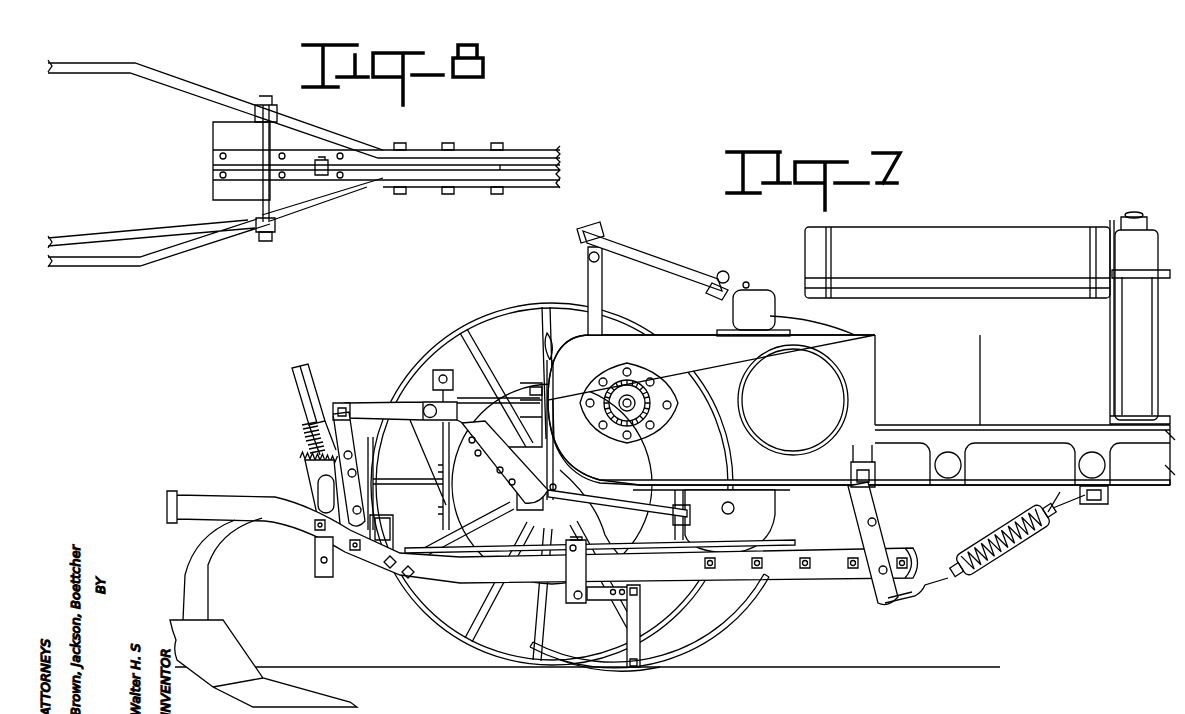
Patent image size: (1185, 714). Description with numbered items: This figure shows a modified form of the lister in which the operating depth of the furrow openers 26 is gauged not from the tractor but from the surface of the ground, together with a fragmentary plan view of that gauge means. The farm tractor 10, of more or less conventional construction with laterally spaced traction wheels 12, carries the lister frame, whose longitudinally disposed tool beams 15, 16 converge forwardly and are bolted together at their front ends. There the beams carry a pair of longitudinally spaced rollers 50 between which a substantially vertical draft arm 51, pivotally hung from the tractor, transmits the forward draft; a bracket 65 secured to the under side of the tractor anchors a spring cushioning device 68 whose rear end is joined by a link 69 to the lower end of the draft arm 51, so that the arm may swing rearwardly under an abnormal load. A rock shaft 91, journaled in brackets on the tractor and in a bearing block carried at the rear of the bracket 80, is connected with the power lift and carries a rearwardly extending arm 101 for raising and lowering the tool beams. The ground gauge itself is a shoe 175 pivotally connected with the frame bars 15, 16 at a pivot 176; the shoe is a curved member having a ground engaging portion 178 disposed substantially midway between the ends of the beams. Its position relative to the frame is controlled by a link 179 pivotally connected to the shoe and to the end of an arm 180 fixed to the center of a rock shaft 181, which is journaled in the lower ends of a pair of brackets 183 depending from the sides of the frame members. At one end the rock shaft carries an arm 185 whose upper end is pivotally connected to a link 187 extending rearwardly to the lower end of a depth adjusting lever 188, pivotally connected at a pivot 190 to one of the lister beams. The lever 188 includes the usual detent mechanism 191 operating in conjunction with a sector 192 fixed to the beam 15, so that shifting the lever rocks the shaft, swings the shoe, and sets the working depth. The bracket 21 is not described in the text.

In FIG. 7, the farm tractor 10 is at (972, 240).
In FIG. 7, the traction wheels 12 is at (488, 315).
In FIG. 8, the tool beam 15 is at (292, 210).
In FIG. 7, the tool beam 15 is at (497, 575).
In FIG. 8, the tool beam 16 is at (318, 132).
In FIG. 7, the bracket 21 is at (393, 542).
In FIG. 7, the furrow opener 26 is at (222, 644).
In FIG. 7, the rollers 50 is at (858, 548).
In FIG. 7, the draft arm 51 is at (832, 517).
In FIG. 7, the bracket 65 is at (1104, 494).
In FIG. 7, the spring cushioning device 68 is at (1000, 562).
In FIG. 7, the link 69 is at (930, 584).
In FIG. 7, the bracket 80 is at (508, 398).
In FIG. 7, the rock shaft 91 is at (425, 402).
In FIG. 7, the rearwardly extending arm 101 is at (358, 412).
In FIG. 8, the shoe 175 is at (368, 204).
In FIG. 7, the shoe 175 is at (710, 636).
In FIG. 8, the pivotal connection 176 is at (448, 187).
In FIG. 7, the pivotal connection 176 is at (806, 568).
In FIG. 7, the ground engaging portion 178 is at (602, 670).
In FIG. 7, the link 179 is at (641, 632).
In FIG. 8, the arm 180 is at (306, 165).
In FIG. 7, the arm 180 is at (600, 602).
In FIG. 8, the rock shaft 181 is at (262, 188).
In FIG. 8, the brackets 183 is at (264, 98).
In FIG. 7, the brackets 183 is at (565, 590).
In FIG. 8, the arm 185 is at (259, 243).
In FIG. 7, the arm 185 is at (550, 500).
In FIG. 7, the link 187 is at (497, 543).
In FIG. 7, the depth adjusting lever 188 is at (316, 555).
In FIG. 7, the pivotal connection 190 is at (318, 490).
In FIG. 7, the detent mechanism 191 is at (308, 443).
In FIG. 7, the sector 192 is at (305, 466).